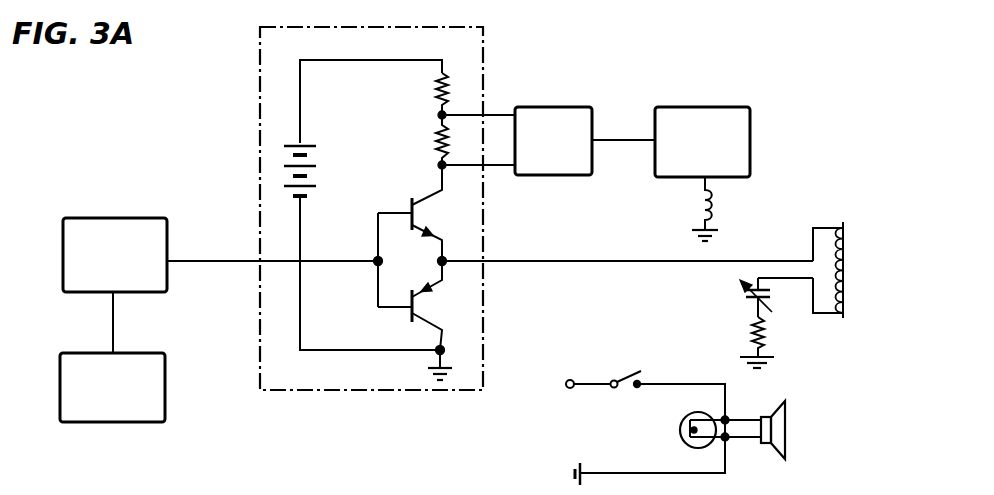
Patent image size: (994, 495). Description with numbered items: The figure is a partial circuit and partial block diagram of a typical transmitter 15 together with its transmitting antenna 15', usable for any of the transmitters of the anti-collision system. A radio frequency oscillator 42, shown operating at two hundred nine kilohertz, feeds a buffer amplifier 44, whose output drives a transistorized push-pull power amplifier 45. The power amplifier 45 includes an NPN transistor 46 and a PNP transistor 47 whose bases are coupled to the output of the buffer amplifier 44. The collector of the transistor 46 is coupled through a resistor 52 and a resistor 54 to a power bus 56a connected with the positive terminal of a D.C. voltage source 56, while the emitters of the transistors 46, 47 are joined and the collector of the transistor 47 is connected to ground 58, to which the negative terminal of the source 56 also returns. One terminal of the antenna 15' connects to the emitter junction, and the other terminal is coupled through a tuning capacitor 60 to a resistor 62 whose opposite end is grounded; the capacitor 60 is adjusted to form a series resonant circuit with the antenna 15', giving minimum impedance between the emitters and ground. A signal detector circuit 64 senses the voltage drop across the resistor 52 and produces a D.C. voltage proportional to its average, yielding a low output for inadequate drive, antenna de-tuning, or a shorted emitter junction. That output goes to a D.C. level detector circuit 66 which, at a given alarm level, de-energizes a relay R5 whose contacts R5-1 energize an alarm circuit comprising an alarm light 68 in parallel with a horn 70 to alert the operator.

The buffer amplifier 44 is at (73, 218).
The radio frequency oscillator 42 is at (70, 353).
The power amplifier 45 is at (465, 390).
The power bus 56a is at (396, 60).
The D.C. voltage source 56 is at (320, 154).
The resistor 54 is at (436, 84).
The resistor 52 is at (436, 146).
The NPN transistor 46 is at (412, 205).
The PNP transistor 47 is at (410, 316).
The ground 58 is at (428, 370).
The signal detector circuit 64 is at (569, 107).
The D.C. level detector circuit 66 is at (712, 107).
The relay R5 is at (698, 202).
The transmitter 15 is at (825, 241).
The transmitting antenna 15' is at (860, 327).
The tuning capacitor 60 is at (745, 296).
The resistor 62 is at (750, 328).
The relay contacts R5-1 is at (652, 351).
The alarm light 68 is at (680, 430).
The horn 70 is at (790, 416).